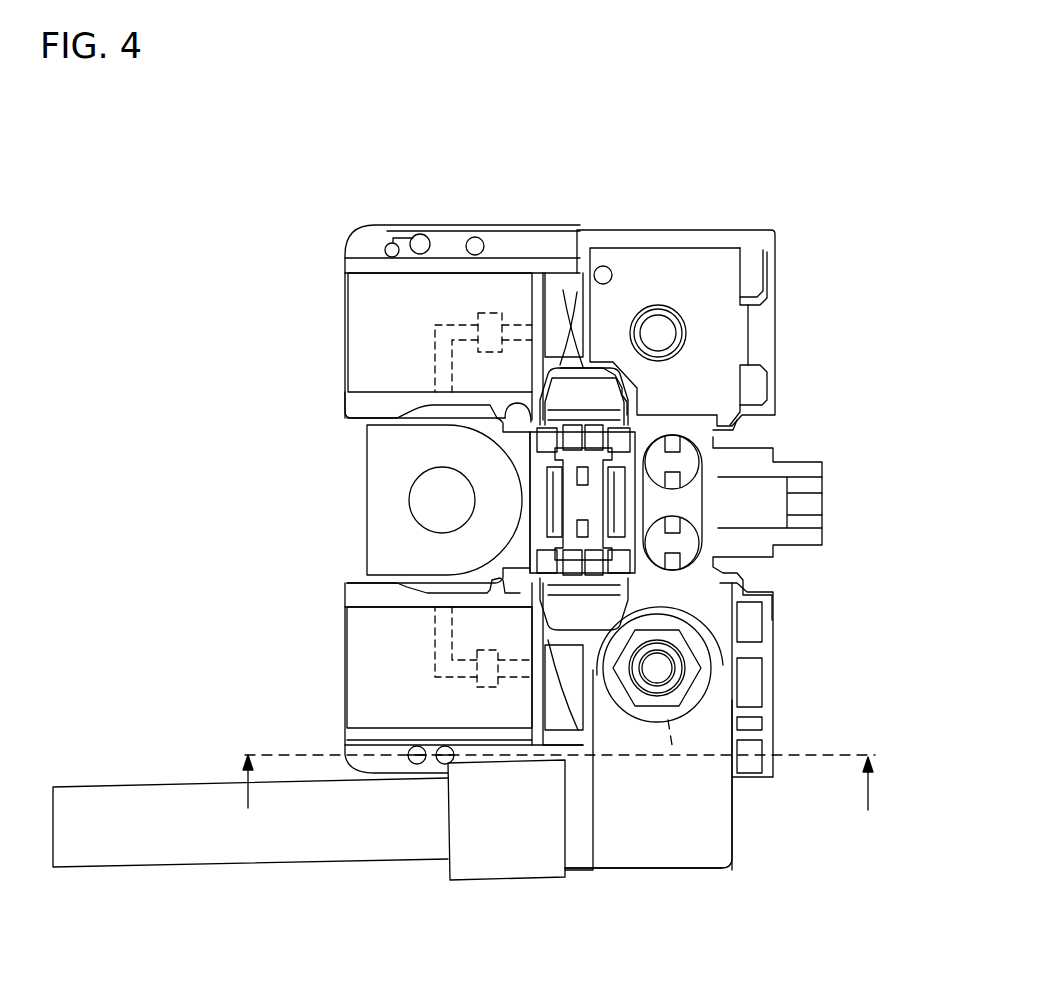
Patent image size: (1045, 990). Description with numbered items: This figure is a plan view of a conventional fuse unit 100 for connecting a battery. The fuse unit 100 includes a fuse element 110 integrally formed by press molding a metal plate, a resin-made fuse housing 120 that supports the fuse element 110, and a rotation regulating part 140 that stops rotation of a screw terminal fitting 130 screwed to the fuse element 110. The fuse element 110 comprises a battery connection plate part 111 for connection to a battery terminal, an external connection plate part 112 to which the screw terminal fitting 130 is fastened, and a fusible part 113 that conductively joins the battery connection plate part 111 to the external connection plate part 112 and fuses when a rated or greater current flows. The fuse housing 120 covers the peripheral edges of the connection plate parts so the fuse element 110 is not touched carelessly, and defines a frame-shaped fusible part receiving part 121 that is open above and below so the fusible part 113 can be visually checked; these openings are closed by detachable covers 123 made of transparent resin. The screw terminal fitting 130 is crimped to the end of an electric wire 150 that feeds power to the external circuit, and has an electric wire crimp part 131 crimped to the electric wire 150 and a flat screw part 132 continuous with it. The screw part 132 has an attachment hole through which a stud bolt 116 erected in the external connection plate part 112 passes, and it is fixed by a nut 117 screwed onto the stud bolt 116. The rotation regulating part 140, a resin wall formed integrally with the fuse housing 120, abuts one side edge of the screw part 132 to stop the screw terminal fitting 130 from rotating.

The fuse unit 100 is at (790, 326).
The fuse element 110 is at (382, 545).
The battery connection plate part 111 is at (383, 463).
The external connection plate part 112 is at (670, 742).
The fusible part 113 is at (437, 343).
The stud bolt 116 is at (658, 678).
The nut 117 is at (688, 658).
The fuse housing 120 is at (672, 230).
The fusible part receiving part 121 is at (400, 727).
The cover 123 is at (373, 293).
The screw terminal fitting 130 is at (657, 830).
The electric wire crimp part 131 is at (503, 847).
The screw part 132 is at (603, 840).
The rotation regulating part 140 is at (770, 688).
The electric wire 150 is at (288, 847).